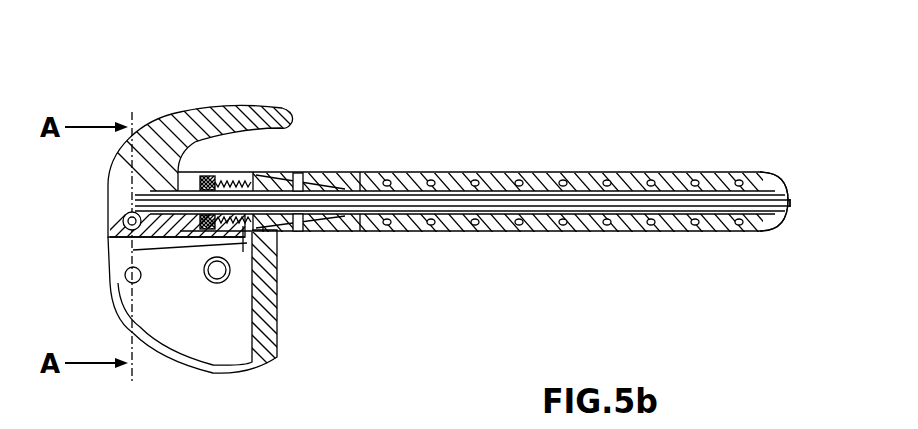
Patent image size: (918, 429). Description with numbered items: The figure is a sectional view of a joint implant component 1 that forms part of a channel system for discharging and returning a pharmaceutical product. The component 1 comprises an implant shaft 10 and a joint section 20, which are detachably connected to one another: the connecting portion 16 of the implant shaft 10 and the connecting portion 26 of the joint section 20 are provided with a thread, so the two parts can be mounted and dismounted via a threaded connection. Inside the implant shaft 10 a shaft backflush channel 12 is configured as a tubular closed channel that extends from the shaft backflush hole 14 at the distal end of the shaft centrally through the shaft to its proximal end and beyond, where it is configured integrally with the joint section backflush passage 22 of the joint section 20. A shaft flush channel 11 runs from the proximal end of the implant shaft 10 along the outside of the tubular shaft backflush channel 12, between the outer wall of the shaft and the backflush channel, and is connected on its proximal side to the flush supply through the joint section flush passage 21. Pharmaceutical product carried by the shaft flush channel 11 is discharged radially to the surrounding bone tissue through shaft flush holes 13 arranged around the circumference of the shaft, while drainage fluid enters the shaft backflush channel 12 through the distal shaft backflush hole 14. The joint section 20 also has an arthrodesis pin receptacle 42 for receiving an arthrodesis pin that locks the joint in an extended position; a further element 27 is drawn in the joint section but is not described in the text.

The joint implant component 1 is at (514, 67).
The implant shaft 10 is at (570, 148).
The shaft flush channel 11 is at (478, 215).
The shaft backflush channel 12 is at (592, 208).
The shaft flush hole 13 is at (742, 185).
The shaft backflush hole 14 is at (791, 198).
The connecting portion of the implant shaft 16 is at (230, 177).
The connecting portion of the joint section 26 is at (218, 223).
The joint section 20 is at (190, 98).
The joint section flush passage 21 is at (148, 191).
The joint section backflush passage 22 is at (168, 207).
The screw 27 is at (222, 270).
The arthrodesis pin receptacle 42 is at (130, 273).